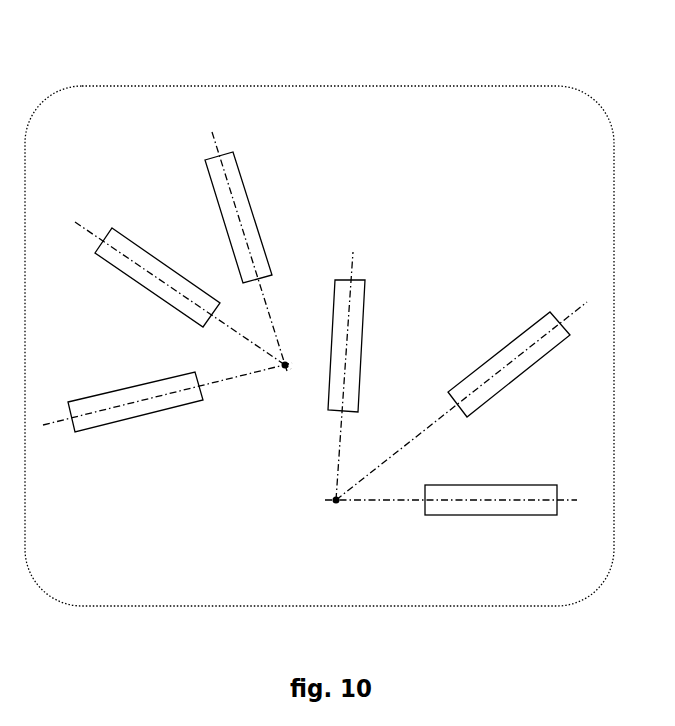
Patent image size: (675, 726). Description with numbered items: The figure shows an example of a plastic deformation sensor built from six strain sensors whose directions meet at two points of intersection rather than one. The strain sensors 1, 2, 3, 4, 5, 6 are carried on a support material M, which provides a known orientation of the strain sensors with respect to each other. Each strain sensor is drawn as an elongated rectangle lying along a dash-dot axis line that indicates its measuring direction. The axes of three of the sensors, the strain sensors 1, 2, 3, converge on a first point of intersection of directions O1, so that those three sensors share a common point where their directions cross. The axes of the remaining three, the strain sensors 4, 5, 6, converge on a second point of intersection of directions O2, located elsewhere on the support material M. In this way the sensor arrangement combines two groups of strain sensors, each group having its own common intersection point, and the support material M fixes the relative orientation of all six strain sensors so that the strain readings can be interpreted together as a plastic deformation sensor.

The strain sensor 1 is at (451, 487).
The strain sensor 2 is at (461, 401).
The strain sensor 3 is at (358, 376).
The strain sensor 4 is at (246, 251).
The strain sensor 5 is at (183, 291).
The strain sensor 6 is at (167, 397).
The support material M is at (319, 346).
The point of intersection of directions O1 is at (358, 524).
The point of intersection of directions O2 is at (287, 391).